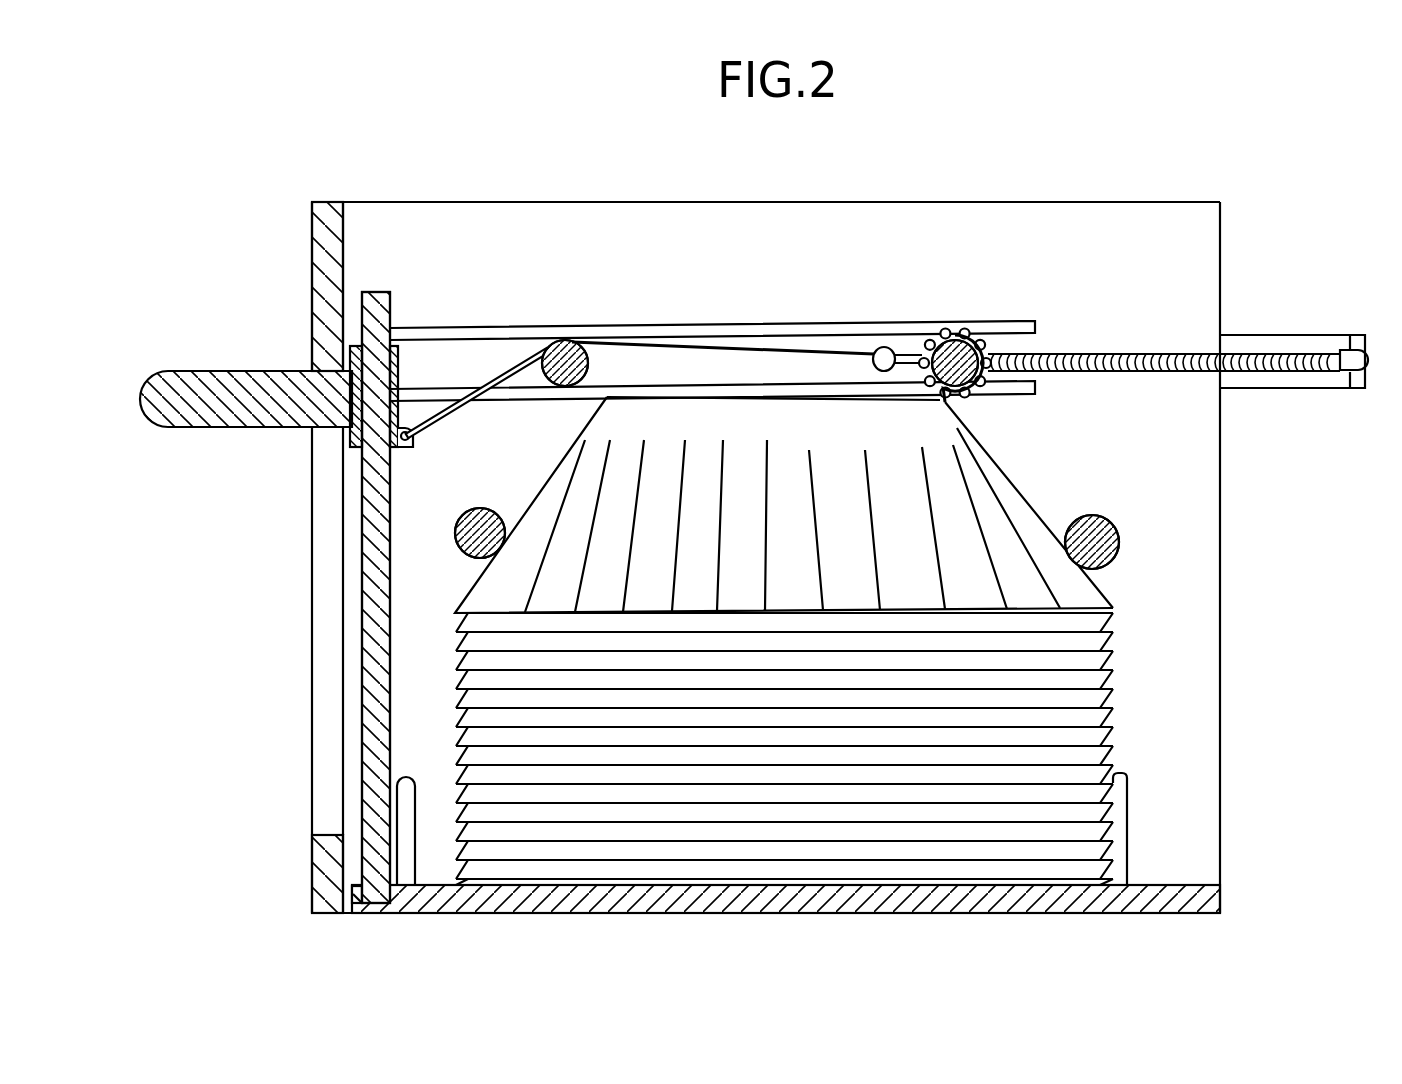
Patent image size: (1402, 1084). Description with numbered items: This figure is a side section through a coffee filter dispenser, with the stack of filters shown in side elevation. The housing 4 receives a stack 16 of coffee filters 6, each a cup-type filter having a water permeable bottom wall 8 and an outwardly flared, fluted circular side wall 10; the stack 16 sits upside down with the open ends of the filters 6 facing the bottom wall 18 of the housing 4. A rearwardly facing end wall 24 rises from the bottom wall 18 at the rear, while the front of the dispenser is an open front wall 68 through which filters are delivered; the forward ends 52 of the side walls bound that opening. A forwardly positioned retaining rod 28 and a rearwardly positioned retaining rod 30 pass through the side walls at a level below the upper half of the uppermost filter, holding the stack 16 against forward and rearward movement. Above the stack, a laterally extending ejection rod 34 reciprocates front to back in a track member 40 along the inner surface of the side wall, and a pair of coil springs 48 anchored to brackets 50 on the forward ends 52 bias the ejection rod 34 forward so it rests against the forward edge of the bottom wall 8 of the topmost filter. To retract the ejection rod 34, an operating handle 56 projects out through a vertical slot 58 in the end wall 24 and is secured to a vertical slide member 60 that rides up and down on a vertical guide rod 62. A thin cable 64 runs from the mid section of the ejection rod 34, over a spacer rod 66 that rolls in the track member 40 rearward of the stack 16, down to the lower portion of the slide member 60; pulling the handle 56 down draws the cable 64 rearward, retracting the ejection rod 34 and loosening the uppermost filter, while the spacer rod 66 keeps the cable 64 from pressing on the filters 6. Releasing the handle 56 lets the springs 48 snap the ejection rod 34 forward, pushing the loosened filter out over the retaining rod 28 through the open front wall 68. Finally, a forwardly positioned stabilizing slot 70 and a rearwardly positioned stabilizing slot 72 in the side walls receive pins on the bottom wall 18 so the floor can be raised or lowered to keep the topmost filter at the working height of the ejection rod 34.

The housing 4 is at (682, 202).
The coffee filter 6 is at (978, 437).
The bottom wall 8 is at (765, 400).
The circular side wall 10 is at (540, 488).
The stack 16 is at (1113, 677).
The bottom wall 18 is at (1200, 883).
The end wall 24 is at (312, 868).
The forwardly positioned retaining rod 28 is at (1103, 520).
The rearwardly positioned retaining rod 30 is at (460, 528).
The ejection rod 34 is at (955, 330).
The second track member 40 is at (472, 327).
The coil springs 48 is at (1195, 352).
The brackets 50 is at (1305, 335).
The forward ends 52 is at (1220, 532).
The operating handle 56 is at (218, 371).
The slot 58 is at (320, 573).
The vertical slide member 60 is at (362, 447).
The vertical guide rod 62 is at (362, 492).
The cable 64 is at (833, 350).
The spacer rod 66 is at (583, 343).
The open front wall 68 is at (1203, 448).
The forwardly positioned stabilizing slot 70 is at (1127, 822).
The rearwardly positioned stabilizing slot 72 is at (407, 785).